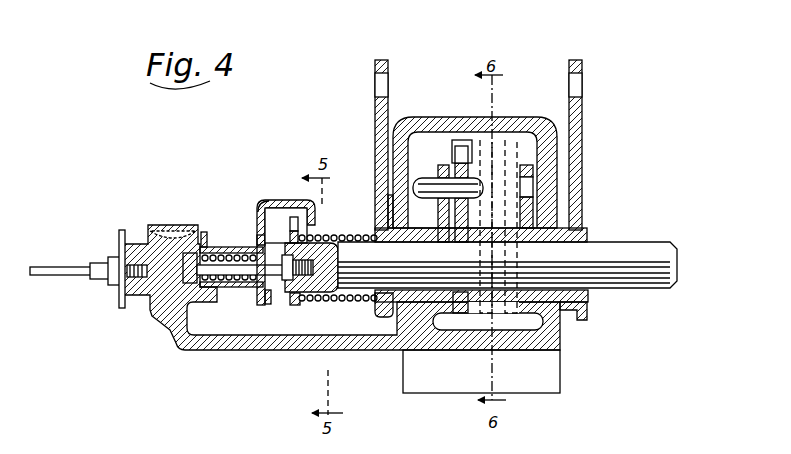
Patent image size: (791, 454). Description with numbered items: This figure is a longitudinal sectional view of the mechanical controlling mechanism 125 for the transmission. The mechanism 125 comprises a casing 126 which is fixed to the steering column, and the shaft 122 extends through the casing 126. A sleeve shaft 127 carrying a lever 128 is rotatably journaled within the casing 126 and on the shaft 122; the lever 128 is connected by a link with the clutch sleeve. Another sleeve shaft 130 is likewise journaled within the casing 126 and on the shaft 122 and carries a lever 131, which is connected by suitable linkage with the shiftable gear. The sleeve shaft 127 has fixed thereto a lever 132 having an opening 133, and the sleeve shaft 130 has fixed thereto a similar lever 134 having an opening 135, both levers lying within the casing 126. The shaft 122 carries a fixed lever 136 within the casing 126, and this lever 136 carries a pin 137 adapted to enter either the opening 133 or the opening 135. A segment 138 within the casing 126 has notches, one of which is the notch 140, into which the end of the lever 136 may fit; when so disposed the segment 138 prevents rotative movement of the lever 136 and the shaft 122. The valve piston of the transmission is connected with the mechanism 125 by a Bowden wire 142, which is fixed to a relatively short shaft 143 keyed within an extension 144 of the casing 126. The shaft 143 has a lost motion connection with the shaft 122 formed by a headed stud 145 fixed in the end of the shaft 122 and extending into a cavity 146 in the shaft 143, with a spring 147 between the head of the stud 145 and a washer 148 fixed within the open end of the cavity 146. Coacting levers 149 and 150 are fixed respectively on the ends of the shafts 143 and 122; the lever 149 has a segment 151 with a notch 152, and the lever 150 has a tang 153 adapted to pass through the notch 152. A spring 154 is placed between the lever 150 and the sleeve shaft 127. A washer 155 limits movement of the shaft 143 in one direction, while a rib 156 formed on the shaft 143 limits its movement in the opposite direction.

The shaft 122 is at (656, 243).
The mechanism 125 is at (558, 113).
The casing 126 is at (428, 118).
The sleeve shaft 127 is at (376, 302).
The lever 128 is at (381, 60).
The sleeve shaft 130 is at (590, 233).
The lever 131 is at (581, 60).
The lever 132 is at (442, 199).
The opening 133 is at (442, 186).
The lever 134 is at (526, 170).
The opening 135 is at (529, 192).
The lever 136 is at (463, 172).
The pin 137 is at (390, 213).
The segment 138 is at (469, 129).
The notch 140 is at (452, 151).
The Bowden wire 142 is at (60, 266).
The shaft 143 is at (221, 246).
The extension 144 is at (158, 313).
The headed stud 145 is at (269, 302).
The cavity 146 is at (220, 285).
The spring 147 is at (231, 255).
The washer 148 is at (256, 301).
The lever 149 is at (276, 199).
The lever 150 is at (301, 302).
The segment 151 is at (312, 208).
The notch 152 is at (322, 215).
The tang 153 is at (268, 200).
The spring 154 is at (334, 235).
The washer 155 is at (122, 231).
The rib 156 is at (205, 231).